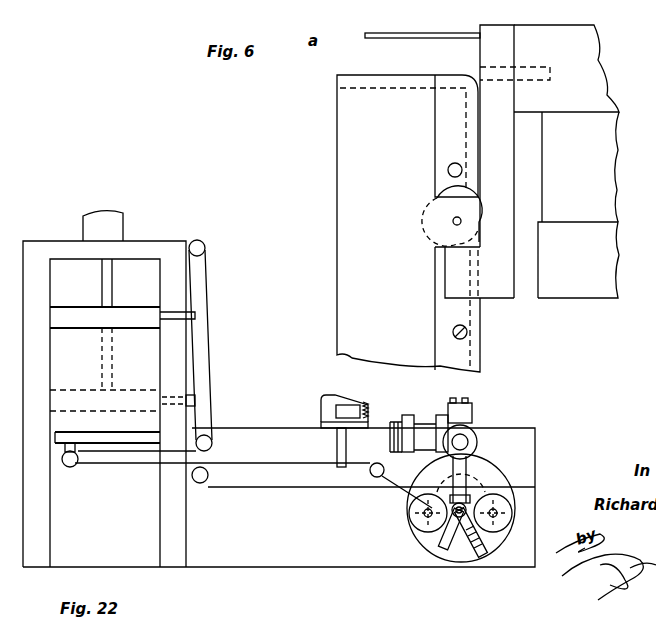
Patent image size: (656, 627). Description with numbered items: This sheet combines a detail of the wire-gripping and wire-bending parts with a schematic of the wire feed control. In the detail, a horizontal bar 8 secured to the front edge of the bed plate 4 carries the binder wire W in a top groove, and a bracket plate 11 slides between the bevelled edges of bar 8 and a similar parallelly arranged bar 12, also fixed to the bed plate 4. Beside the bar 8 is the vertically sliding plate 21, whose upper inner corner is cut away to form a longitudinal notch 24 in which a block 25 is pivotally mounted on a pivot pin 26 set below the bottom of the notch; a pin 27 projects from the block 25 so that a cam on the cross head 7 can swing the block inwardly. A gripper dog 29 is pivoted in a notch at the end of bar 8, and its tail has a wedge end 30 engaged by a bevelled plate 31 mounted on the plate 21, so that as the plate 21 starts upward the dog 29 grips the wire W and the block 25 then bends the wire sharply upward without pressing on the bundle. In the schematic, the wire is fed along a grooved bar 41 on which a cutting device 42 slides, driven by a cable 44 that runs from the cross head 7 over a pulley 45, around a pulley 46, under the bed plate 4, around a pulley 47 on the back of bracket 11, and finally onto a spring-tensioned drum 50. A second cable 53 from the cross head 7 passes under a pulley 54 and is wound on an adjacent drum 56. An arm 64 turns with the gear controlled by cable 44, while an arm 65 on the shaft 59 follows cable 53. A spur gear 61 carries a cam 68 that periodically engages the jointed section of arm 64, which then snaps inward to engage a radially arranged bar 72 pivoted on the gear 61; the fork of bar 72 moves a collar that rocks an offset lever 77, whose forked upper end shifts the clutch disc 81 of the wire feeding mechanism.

In FIG. 6A, the wire W is at (452, 38).
In FIG. 6A, the horizontal bar 8 is at (549, 68).
In FIG. 6A, the bracket plate 11 is at (580, 167).
In FIG. 6A, the parallelly arranged bar 12 is at (578, 260).
In FIG. 6A, the plate 21 is at (340, 305).
In FIG. 6A, the longitudinal notch 24 is at (435, 164).
In FIG. 6A, the block 25 is at (440, 118).
In FIG. 6A, the pivot pin 26 is at (452, 221).
In FIG. 6A, the pin 27 is at (448, 171).
In FIG. 6A, the gripper dog 29 is at (508, 161).
In FIG. 6A, the wedge end 30 is at (455, 268).
In FIG. 6A, the bevelled plate 31 is at (447, 345).
In FIG. 22, the bed plate 4 is at (120, 431).
In FIG. 22, the cross head 7 is at (150, 310).
In FIG. 22, the grooved bar 41 is at (298, 430).
In FIG. 22, the cutting device 42 is at (370, 418).
In FIG. 22, the cable 44 is at (322, 460).
In FIG. 22, the pulley 45 is at (206, 248).
In FIG. 22, the pulley 46 is at (213, 445).
In FIG. 22, the pulley 47 is at (69, 467).
In FIG. 22, the drum 50 is at (408, 513).
In FIG. 22, the cable 53 is at (337, 487).
In FIG. 22, the pulley 54 is at (204, 483).
In FIG. 22, the drum 56 is at (512, 512).
In FIG. 22, the shaft 59 is at (457, 498).
In FIG. 22, the spur gear 61 is at (432, 555).
In FIG. 22, the arm 64 is at (455, 552).
In FIG. 22, the arm 65 is at (440, 532).
In FIG. 22, the cam 68 is at (500, 553).
In FIG. 22, the bar 72 is at (487, 556).
In FIG. 22, the offset lever 77 is at (465, 462).
In FIG. 22, the clutch disc 81 is at (468, 432).